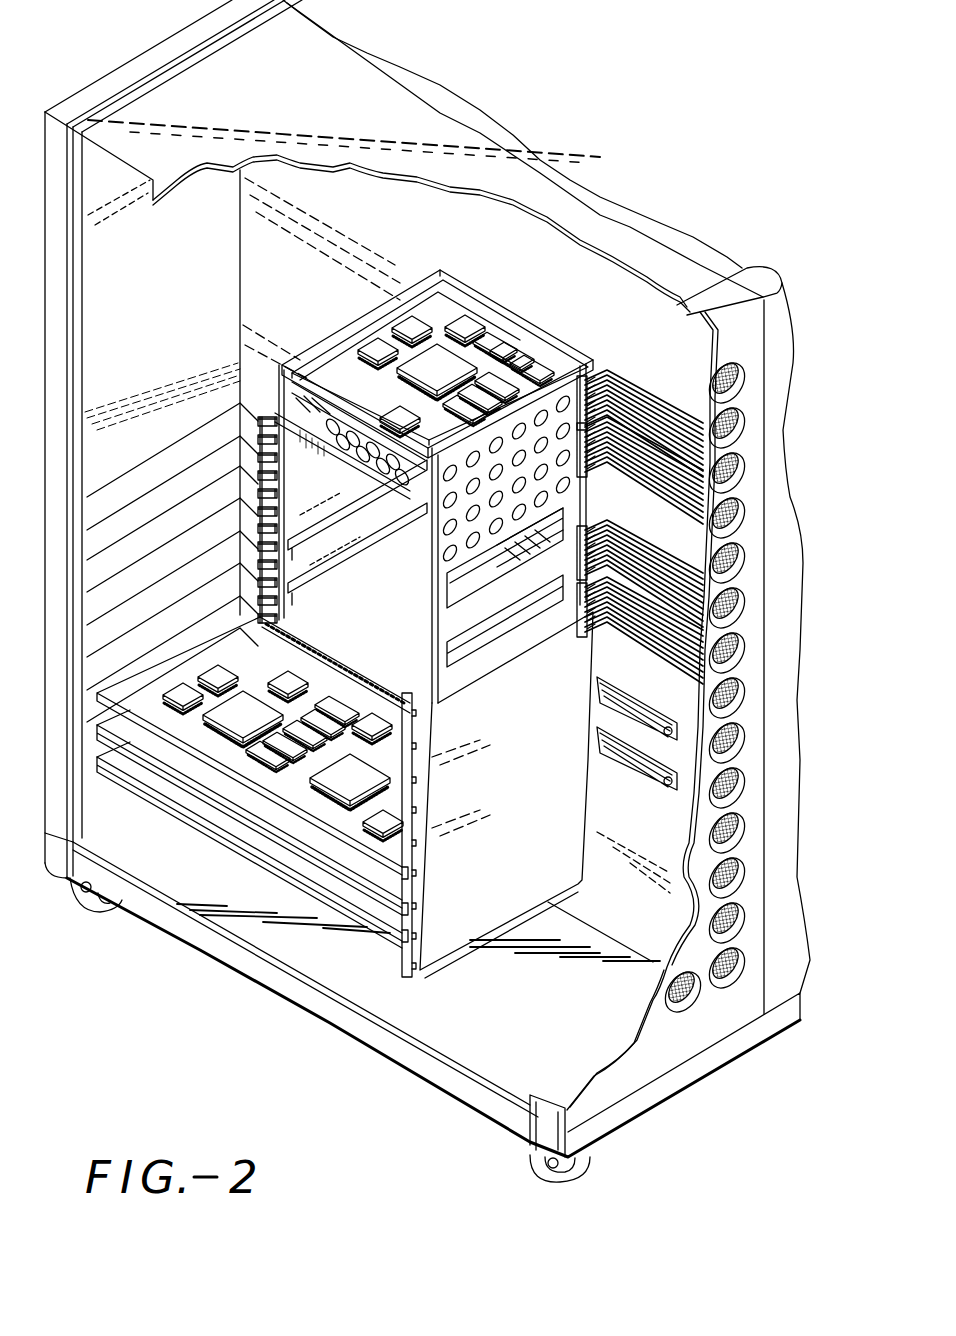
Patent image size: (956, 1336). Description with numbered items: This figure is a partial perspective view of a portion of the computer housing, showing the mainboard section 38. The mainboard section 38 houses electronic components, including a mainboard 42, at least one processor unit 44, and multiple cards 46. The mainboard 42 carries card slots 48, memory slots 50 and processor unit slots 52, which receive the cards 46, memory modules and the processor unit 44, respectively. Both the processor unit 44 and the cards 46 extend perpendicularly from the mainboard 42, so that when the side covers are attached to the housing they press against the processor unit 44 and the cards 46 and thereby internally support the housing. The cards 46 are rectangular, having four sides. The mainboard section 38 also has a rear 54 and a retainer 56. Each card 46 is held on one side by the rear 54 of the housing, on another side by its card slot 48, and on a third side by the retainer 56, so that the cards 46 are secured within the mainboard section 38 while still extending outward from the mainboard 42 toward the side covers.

The mainboard section 38 is at (427, 591).
The mainboard 42 is at (284, 297).
The processor unit 44 is at (447, 313).
The cards 46 is at (220, 805).
The card slots 48 is at (261, 423).
The memory slots 50 is at (637, 397).
The processor unit slots 52 is at (512, 332).
The rear 54 is at (157, 365).
The retainer 56 is at (497, 845).